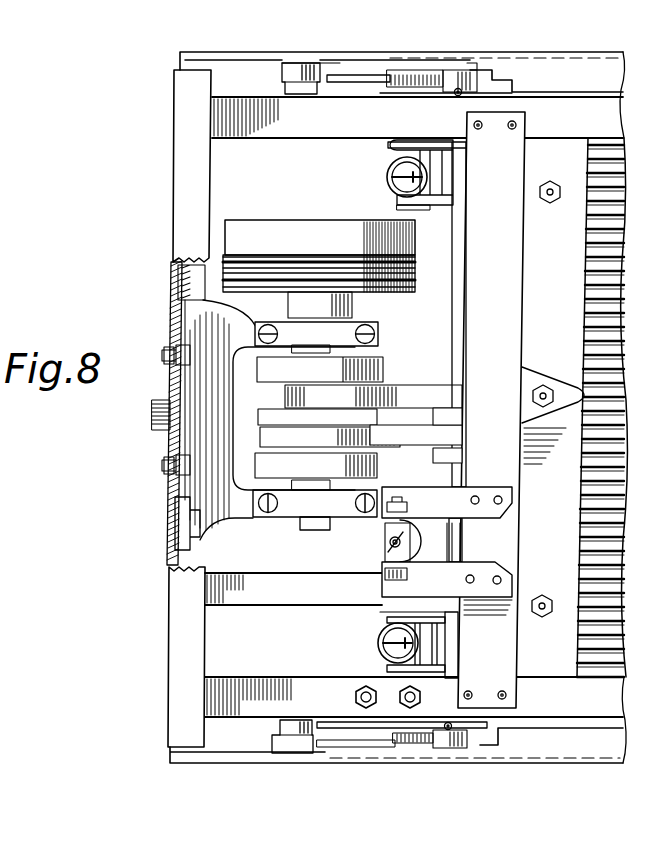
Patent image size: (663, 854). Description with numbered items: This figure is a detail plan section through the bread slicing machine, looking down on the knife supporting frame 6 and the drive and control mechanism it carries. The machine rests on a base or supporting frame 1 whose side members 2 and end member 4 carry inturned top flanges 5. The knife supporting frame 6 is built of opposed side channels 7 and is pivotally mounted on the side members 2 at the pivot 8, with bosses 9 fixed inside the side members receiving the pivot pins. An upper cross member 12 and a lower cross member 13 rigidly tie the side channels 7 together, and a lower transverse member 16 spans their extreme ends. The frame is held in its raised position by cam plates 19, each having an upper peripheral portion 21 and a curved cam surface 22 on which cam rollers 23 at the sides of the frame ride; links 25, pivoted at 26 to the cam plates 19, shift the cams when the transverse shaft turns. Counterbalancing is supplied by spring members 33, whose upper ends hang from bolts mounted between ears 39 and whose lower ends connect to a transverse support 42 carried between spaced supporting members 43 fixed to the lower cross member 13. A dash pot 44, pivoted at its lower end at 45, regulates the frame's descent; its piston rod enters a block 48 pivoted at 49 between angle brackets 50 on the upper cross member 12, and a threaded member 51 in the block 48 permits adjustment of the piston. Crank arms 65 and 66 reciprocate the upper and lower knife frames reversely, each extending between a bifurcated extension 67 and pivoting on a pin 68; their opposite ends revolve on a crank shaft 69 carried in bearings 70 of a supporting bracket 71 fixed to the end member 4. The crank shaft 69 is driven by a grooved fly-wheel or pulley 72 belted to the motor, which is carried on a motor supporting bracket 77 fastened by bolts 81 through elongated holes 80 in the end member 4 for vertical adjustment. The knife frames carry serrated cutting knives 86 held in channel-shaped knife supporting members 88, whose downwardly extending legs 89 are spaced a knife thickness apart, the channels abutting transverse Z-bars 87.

The base or supporting frame 1 is at (528, 60).
The side members 2 is at (578, 56).
The end member 4 is at (172, 197).
The inturned top flanges 5 is at (612, 70).
The knife supporting frame 6 is at (622, 183).
The side channels 7 is at (620, 120).
The pivot mounting 8 is at (298, 88).
The bosses 9 is at (303, 87).
The upper cross member 12 is at (515, 331).
The lower cross member 13 is at (452, 353).
The lower transverse member 16 is at (654, 543).
The cam plates 19 is at (372, 78).
The upper peripheral portion 21 is at (338, 78).
The cam surface 22 is at (416, 745).
The cam rollers 23 is at (465, 70).
The links 25 is at (455, 96).
The pivotal connection 26 is at (398, 86).
The spring members 33 is at (388, 182).
The ears 39 is at (391, 173).
The transverse support 42 is at (418, 204).
The supporting members 43 is at (392, 145).
The dash pot 44 is at (370, 547).
The pivot 45 is at (433, 545).
The block 48 is at (402, 540).
The pivot 49 is at (365, 568).
The angle brackets 50 is at (490, 490).
The threaded member 51 is at (405, 572).
The crank arm 65 is at (421, 395).
The crank arm 66 is at (415, 440).
The bifurcated extension 67 is at (453, 414).
The pivot pin 68 is at (462, 450).
The crank shaft 69 is at (303, 530).
The bearings 70 is at (372, 327).
The supporting bracket 71 is at (245, 327).
The fly-wheel or pulley 72 is at (279, 226).
The motor supporting bracket 77 is at (170, 394).
The elongated holes 80 is at (172, 347).
The bolts 81 is at (172, 355).
The cutting knives 86 is at (621, 322).
The Z-bars 87 is at (656, 415).
The knife supporting members 88 is at (656, 388).
The legs 89 is at (172, 378).